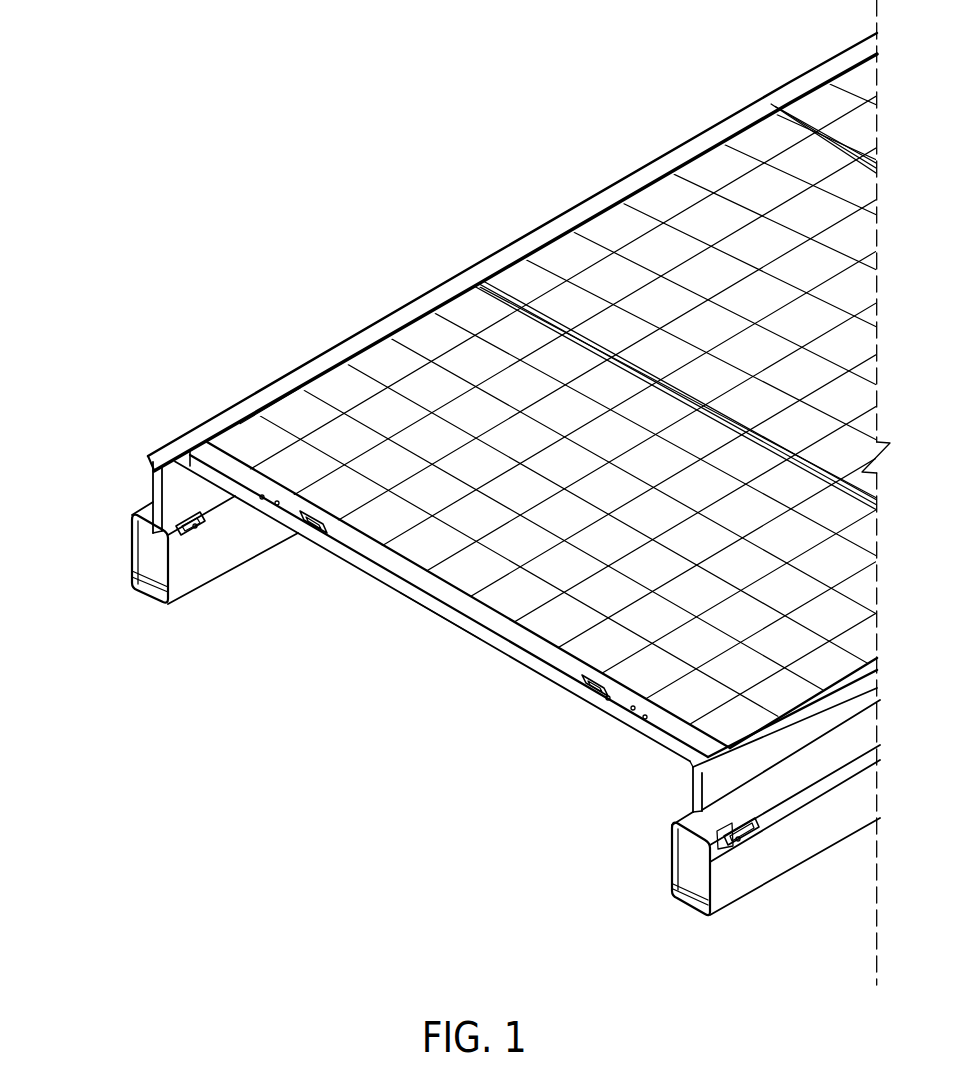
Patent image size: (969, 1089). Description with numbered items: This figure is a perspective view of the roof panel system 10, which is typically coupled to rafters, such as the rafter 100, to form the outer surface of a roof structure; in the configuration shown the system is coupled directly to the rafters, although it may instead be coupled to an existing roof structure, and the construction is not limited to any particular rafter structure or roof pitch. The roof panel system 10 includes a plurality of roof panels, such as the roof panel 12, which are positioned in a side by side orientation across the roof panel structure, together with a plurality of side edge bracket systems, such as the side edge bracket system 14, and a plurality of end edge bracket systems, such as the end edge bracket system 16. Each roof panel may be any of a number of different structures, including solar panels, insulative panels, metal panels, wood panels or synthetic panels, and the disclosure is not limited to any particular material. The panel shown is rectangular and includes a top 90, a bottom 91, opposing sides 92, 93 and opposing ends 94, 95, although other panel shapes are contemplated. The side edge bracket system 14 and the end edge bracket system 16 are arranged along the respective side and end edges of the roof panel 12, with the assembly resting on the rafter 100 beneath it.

The roof panel system 10 is at (430, 226).
The roof panel 12 is at (427, 337).
The side edge bracket system 14 is at (180, 441).
The end edge bracket system 16 is at (398, 586).
The top 90 is at (303, 412).
The bottom 91 is at (440, 624).
The side 92 is at (272, 410).
The side 93 is at (803, 706).
The end 94 is at (280, 505).
The end 95 is at (520, 292).
The rafter 100 is at (124, 548).